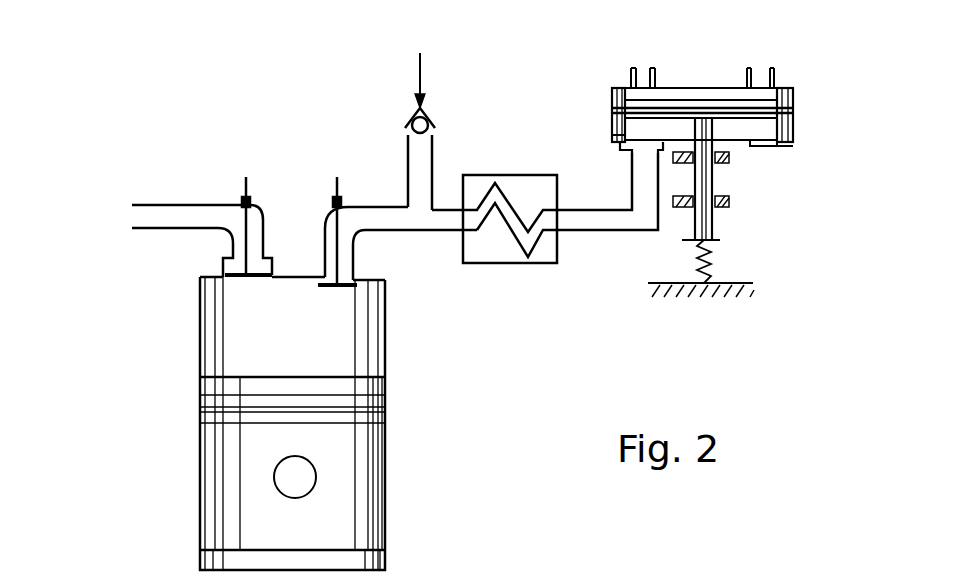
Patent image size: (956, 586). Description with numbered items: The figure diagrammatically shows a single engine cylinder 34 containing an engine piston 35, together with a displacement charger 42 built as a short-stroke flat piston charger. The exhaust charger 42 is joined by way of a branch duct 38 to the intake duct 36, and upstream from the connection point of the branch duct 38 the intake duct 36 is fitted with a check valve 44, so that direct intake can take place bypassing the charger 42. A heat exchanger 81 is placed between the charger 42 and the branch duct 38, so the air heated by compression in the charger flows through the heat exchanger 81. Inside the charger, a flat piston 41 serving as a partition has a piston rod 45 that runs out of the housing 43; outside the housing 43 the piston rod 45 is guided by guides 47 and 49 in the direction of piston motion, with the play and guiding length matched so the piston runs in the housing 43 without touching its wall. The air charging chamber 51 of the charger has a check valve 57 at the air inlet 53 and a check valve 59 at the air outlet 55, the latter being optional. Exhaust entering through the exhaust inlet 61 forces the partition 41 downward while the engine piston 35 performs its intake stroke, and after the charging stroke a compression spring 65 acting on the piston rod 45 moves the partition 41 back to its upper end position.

The engine cylinder 34 is at (386, 343).
The piston 35 is at (386, 456).
The intake duct 36 is at (412, 178).
The branch duct 38 is at (412, 215).
The piston 41 is at (637, 147).
The exhaust charger 42 is at (612, 95).
The housing 43 is at (612, 135).
The check valve 44 is at (412, 115).
The piston rod 45 is at (713, 180).
The guide 47 is at (730, 162).
The guide 49 is at (727, 208).
The air charging chamber 51 is at (728, 130).
The air inlet 53 is at (762, 147).
The air outlet 55 is at (633, 162).
The check valve 57 is at (756, 140).
The check valve 59 is at (678, 117).
The exhaust inlet 61 is at (643, 88).
The compression spring 65 is at (697, 268).
The heat exchanger 81 is at (545, 250).